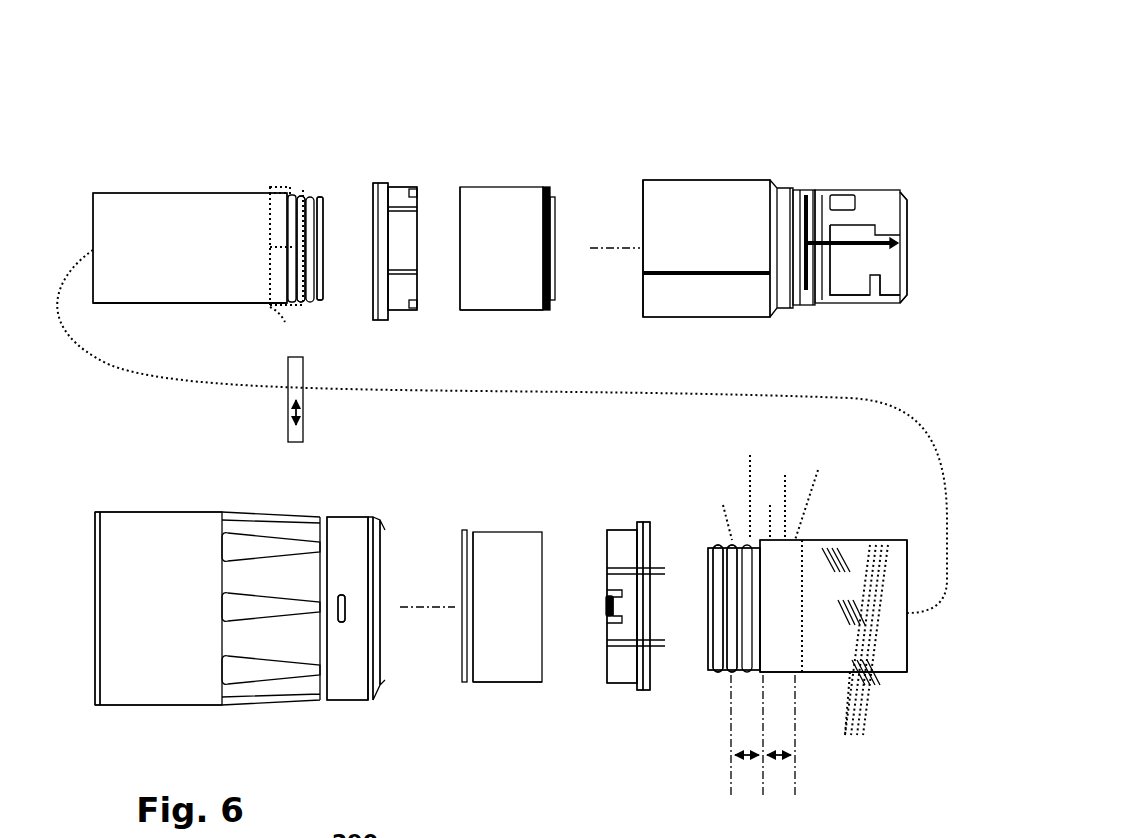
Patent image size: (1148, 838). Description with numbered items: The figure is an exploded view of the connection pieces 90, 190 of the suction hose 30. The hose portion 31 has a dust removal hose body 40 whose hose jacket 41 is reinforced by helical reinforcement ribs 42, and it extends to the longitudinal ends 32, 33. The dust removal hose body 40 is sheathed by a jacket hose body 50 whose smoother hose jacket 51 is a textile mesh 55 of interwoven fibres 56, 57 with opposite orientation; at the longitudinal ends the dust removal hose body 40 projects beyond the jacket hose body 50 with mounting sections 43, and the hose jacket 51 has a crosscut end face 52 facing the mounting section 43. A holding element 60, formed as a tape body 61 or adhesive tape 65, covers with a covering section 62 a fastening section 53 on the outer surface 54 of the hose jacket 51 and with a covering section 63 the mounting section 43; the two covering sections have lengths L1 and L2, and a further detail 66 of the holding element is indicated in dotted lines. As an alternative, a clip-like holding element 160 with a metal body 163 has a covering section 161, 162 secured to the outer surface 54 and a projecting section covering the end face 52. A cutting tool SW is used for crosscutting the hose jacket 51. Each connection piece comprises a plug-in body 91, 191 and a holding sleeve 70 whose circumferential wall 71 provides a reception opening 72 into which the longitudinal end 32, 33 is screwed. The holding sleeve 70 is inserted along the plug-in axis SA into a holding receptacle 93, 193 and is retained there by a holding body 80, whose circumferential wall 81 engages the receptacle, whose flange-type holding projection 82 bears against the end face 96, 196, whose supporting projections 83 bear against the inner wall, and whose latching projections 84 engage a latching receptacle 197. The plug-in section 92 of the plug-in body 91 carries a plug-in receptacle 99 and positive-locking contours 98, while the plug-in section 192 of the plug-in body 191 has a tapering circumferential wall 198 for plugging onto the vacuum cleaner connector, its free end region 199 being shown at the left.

The suction hose 30 is at (807, 147).
The hose portion 31 is at (102, 193).
The longitudinal end 32 is at (813, 540).
The longitudinal end 33 is at (216, 298).
The dust removal hose body 40 is at (320, 196).
The hose jacket 41 is at (320, 245).
The reinforcement ribs 42 is at (309, 302).
The mounting section 43 is at (740, 672).
The jacket hose body 50 is at (160, 193).
The hose jacket 51 is at (890, 672).
The end face 52 is at (725, 672).
The fastening section 53 is at (780, 672).
The outer surface 54 is at (208, 298).
The textile mesh 55 is at (872, 628).
The fibre 56 is at (848, 717).
The fibre 57 is at (870, 680).
The holding element 60 is at (750, 540).
The tape body 61 is at (816, 492).
The covering section 62 is at (770, 512).
The covering section 63 is at (720, 508).
The adhesive tape 65 is at (270, 262).
The opening 66 is at (275, 247).
The holding sleeve 70 is at (510, 187).
The circumferential wall 71 is at (477, 302).
The reception opening 72 is at (460, 275).
The holding body 80 is at (383, 183).
The circumferential wall 81 is at (400, 300).
The holding projection 82 is at (380, 310).
The supporting projections 83 is at (405, 210).
The latching projections 84 is at (414, 190).
The connection piece 90 is at (875, 192).
The plug-in body 91 is at (678, 185).
The plug-in section 92 is at (842, 305).
The holding receptacle 93 is at (643, 213).
The end face 96 is at (643, 236).
The positive-locking contours 98 is at (880, 303).
The plug-in receptacle 99 is at (905, 218).
The holding element 160 is at (283, 188).
The covering section 161 is at (280, 190).
The covering section 162 is at (300, 192).
The metal body 163 is at (270, 192).
The connection piece 190 is at (155, 510).
The plug-in body 191 is at (333, 528).
The plug-in section 192 is at (155, 692).
The holding receptacle 193 is at (372, 566).
The end face 196 is at (383, 684).
The latching receptacle 197 is at (346, 606).
The circumferential wall 198 is at (187, 520).
The cap lip 199 is at (92, 553).
The plug-in axis SA is at (612, 252).
The cutting tool SW is at (290, 388).
The length L1 is at (742, 765).
The length L2 is at (778, 765).